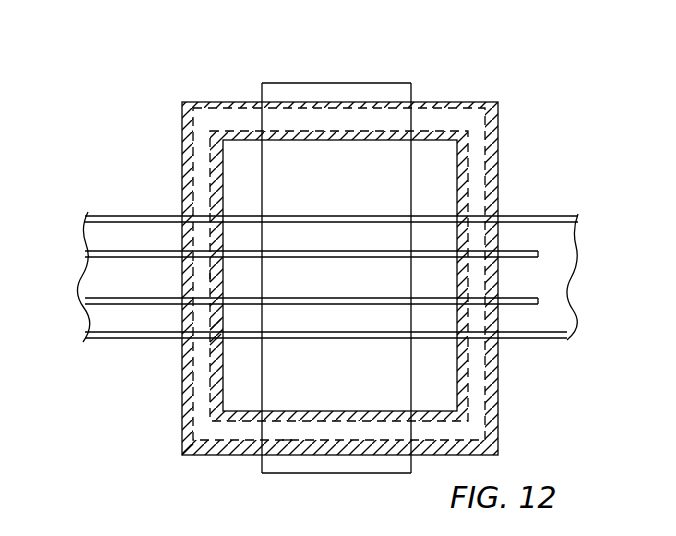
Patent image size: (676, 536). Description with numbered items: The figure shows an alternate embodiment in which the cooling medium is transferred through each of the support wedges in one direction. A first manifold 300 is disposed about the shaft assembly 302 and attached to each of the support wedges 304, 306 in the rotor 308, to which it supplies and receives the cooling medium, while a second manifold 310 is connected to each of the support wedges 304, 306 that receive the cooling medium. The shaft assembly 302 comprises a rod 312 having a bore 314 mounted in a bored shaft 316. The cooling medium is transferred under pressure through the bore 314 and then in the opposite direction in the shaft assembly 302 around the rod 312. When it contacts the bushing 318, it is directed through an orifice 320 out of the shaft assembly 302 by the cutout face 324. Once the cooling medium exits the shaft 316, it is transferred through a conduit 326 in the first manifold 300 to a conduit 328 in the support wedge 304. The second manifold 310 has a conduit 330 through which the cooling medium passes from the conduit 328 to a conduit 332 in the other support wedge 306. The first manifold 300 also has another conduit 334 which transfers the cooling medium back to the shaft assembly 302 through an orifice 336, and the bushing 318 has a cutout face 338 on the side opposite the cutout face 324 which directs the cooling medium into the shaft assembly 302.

The first manifold 300 is at (206, 103).
The shaft assembly 302 is at (566, 216).
The support wedge 304 is at (372, 92).
The support wedge 306 is at (398, 473).
The rotor 308 is at (334, 83).
The second manifold 310 is at (499, 142).
The rod 312 is at (102, 251).
The bore 314 is at (103, 279).
The bored shaft 316 is at (96, 216).
The bushing 318 is at (208, 276).
The orifice 320 is at (203, 218).
The cutout face 324 is at (203, 250).
The conduit 326 is at (196, 163).
The conduit 328 is at (397, 120).
The conduit 330 is at (475, 123).
The conduit 332 is at (278, 440).
The conduit 334 is at (182, 455).
The orifice 336 is at (205, 330).
The cutout face 338 is at (198, 318).